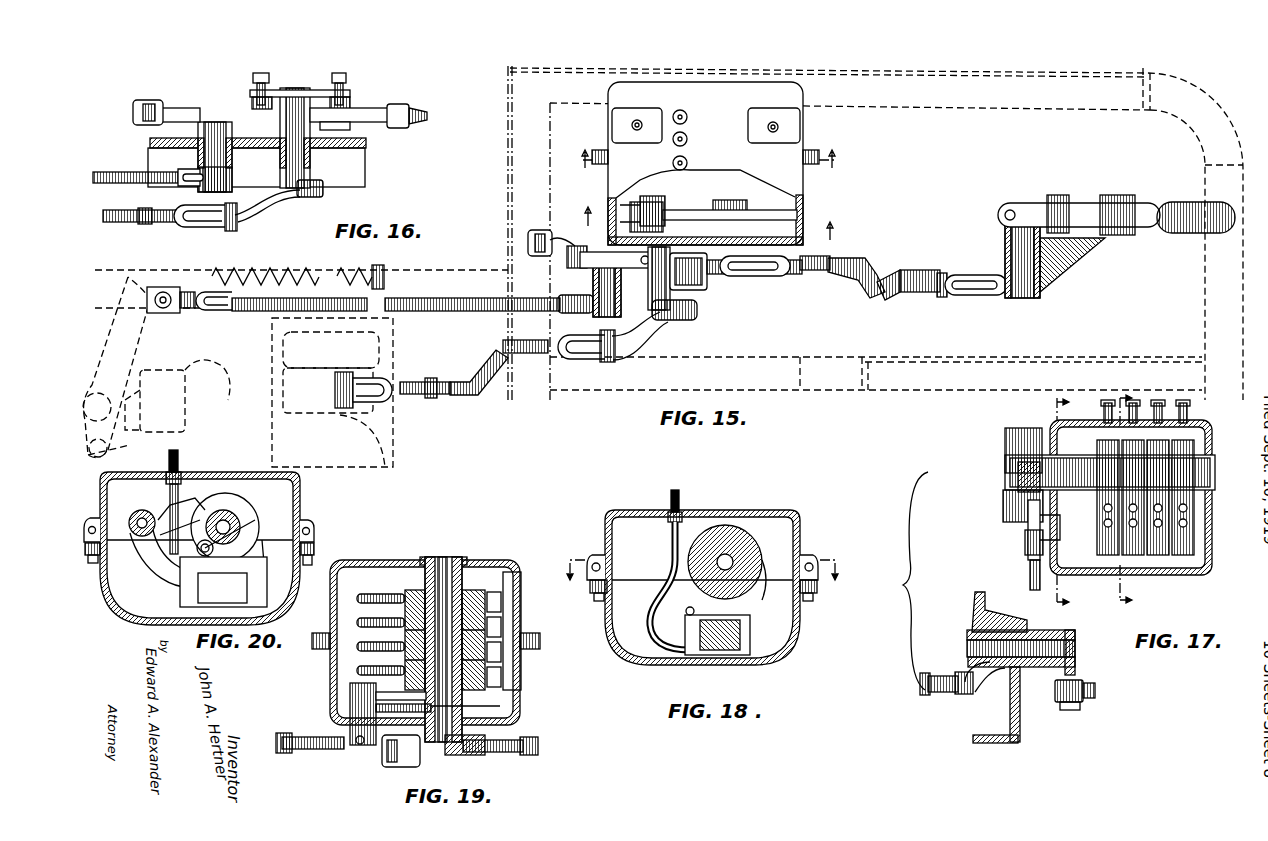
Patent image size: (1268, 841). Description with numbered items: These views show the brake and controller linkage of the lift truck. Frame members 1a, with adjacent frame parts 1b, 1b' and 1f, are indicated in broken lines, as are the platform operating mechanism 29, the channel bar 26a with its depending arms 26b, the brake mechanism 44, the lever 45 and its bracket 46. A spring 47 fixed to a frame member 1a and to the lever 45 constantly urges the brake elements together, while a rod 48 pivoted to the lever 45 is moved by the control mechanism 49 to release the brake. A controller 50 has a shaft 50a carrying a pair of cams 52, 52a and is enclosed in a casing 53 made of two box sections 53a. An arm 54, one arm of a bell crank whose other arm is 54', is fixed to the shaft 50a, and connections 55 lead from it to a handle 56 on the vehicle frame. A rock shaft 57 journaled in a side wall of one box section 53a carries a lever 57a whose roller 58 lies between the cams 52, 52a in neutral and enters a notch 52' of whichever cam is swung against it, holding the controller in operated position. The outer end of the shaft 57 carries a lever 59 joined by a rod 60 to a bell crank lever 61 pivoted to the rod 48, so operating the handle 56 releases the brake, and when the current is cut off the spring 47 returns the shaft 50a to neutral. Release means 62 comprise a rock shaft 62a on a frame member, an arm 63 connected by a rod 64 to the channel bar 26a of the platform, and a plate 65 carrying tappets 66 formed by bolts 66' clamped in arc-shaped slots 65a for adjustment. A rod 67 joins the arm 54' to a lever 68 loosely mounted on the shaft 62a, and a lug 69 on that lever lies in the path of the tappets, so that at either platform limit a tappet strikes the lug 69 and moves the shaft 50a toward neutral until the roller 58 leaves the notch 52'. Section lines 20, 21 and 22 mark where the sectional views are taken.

In FIG. 16, the frame member 1a is at (365, 175).
In FIG. 15, the frame member 1a is at (452, 270).
In FIG. 17, the frame member 1a is at (1020, 740).
In FIG. 15, the frame side member 1b is at (876, 234).
In FIG. 15, the frame cross member 1b' is at (850, 121).
In FIG. 15, the frame partition 1f is at (508, 190).
In FIG. 15, the section line 20— 20 is at (708, 150).
In FIG. 17, the section line 20— 20 is at (1145, 497).
In FIG. 18, the section line 21— 21 is at (701, 580).
In FIG. 15, the section line 22— 22 is at (709, 215).
In FIG. 17, the section line 22— 22 is at (1072, 503).
In FIG. 15, the channel bar 26a is at (393, 437).
In FIG. 15, the depending arm 26b is at (328, 413).
In FIG. 15, the platform moving mechanism 29 is at (204, 369).
In FIG. 15, the brake mechanism 44 is at (155, 386).
In FIG. 15, the lever 45 is at (100, 363).
In FIG. 15, the bracket 46 is at (150, 448).
In FIG. 15, the spring 47 is at (290, 262).
In FIG. 16, the rod 48 is at (113, 172).
In FIG. 15, the rod 48 is at (248, 311).
In FIG. 15, the motor operating mechanism 49 is at (754, 285).
In FIG. 15, the controller 50 is at (706, 139).
In FIG. 20, the controller 50 is at (246, 502).
In FIG. 19, the controller 50 is at (439, 614).
In FIG. 18, the controller 50 is at (700, 570).
In FIG. 17, the controller 50 is at (1096, 497).
In FIG. 15, the controller shaft 50a is at (742, 278).
In FIG. 20, the controller shaft 50a is at (240, 514).
In FIG. 19, the controller shaft 50a is at (448, 557).
In FIG. 18, the controller shaft 50a is at (705, 540).
In FIG. 17, the controller shaft 50a is at (1010, 485).
In FIG. 15, the cam 52 is at (657, 190).
In FIG. 20, the cam 52 is at (181, 488).
In FIG. 19, the cam 52 is at (396, 747).
In FIG. 20, the notch 52' is at (239, 508).
In FIG. 15, the cam 52a is at (800, 210).
In FIG. 20, the cam 52a is at (258, 584).
In FIG. 19, the cam 52a is at (500, 703).
In FIG. 17, the cam 52a is at (1035, 556).
In FIG. 15, the casing 53 is at (610, 94).
In FIG. 20, the casing 53 is at (305, 508).
In FIG. 19, the casing 53 is at (500, 562).
In FIG. 18, the casing 53 is at (790, 640).
In FIG. 17, the casing 53 is at (1212, 440).
In FIG. 15, the box section 53a is at (800, 98).
In FIG. 20, the box section 53a is at (240, 472).
In FIG. 19, the box section 53a is at (355, 566).
In FIG. 18, the box section 53a is at (628, 510).
In FIG. 17, the box section 53a is at (1053, 426).
In FIG. 15, the arm 54 is at (695, 281).
In FIG. 19, the arm 54 is at (484, 756).
In FIG. 17, the arm 54 is at (1005, 470).
In FIG. 19, the arm 54' is at (530, 758).
In FIG. 17, the arm 54' is at (999, 470).
In FIG. 15, the connections 55 is at (885, 272).
In FIG. 15, the handle 56 is at (1160, 202).
In FIG. 15, the rock shaft 57 is at (655, 292).
In FIG. 20, the rock shaft 57 is at (140, 508).
In FIG. 19, the rock shaft 57 is at (348, 705).
In FIG. 15, the lever 57a is at (650, 202).
In FIG. 20, the lever 57a is at (147, 560).
In FIG. 19, the lever 57a is at (350, 688).
In FIG. 17, the lever 57a is at (1025, 519).
In FIG. 20, the anti-friction roller 58 is at (214, 548).
In FIG. 17, the anti-friction roller 58 is at (1022, 532).
In FIG. 15, the lever 59 is at (646, 276).
In FIG. 19, the lever 59 is at (326, 752).
In FIG. 16, the rod 60 is at (158, 103).
In FIG. 15, the rod 60 is at (548, 256).
In FIG. 17, the rod 60 is at (1030, 582).
In FIG. 16, the bell crank lever 61 is at (190, 108).
In FIG. 15, the bell crank lever 61 is at (575, 244).
In FIG. 16, the release means 62 is at (293, 197).
In FIG. 15, the release means 62 is at (674, 318).
In FIG. 17, the release means 62 is at (966, 695).
In FIG. 16, the rock shaft 62a is at (310, 166).
In FIG. 17, the rock shaft 62a is at (993, 660).
In FIG. 16, the arm 63 is at (262, 208).
In FIG. 15, the arm 63 is at (620, 352).
In FIG. 17, the arm 63 is at (975, 672).
In FIG. 16, the rod 64 is at (115, 222).
In FIG. 15, the rod 64 is at (468, 376).
In FIG. 17, the rod 64 is at (925, 696).
In FIG. 16, the plate 65 is at (296, 90).
In FIG. 15, the plate 65 is at (607, 178).
In FIG. 17, the plate 65 is at (1075, 705).
In FIG. 17, the arc-shaped slot 65a is at (1095, 700).
In FIG. 16, the tappet 66 is at (297, 112).
In FIG. 17, the tappet 66 is at (1064, 693).
In FIG. 16, the bolt 66' is at (325, 85).
In FIG. 17, the bolt 66' is at (1106, 680).
In FIG. 16, the rod 67 is at (427, 115).
In FIG. 15, the rod 67 is at (830, 257).
In FIG. 16, the lever 68 is at (372, 122).
In FIG. 17, the lever 68 is at (1040, 632).
In FIG. 16, the lug 69 is at (362, 106).